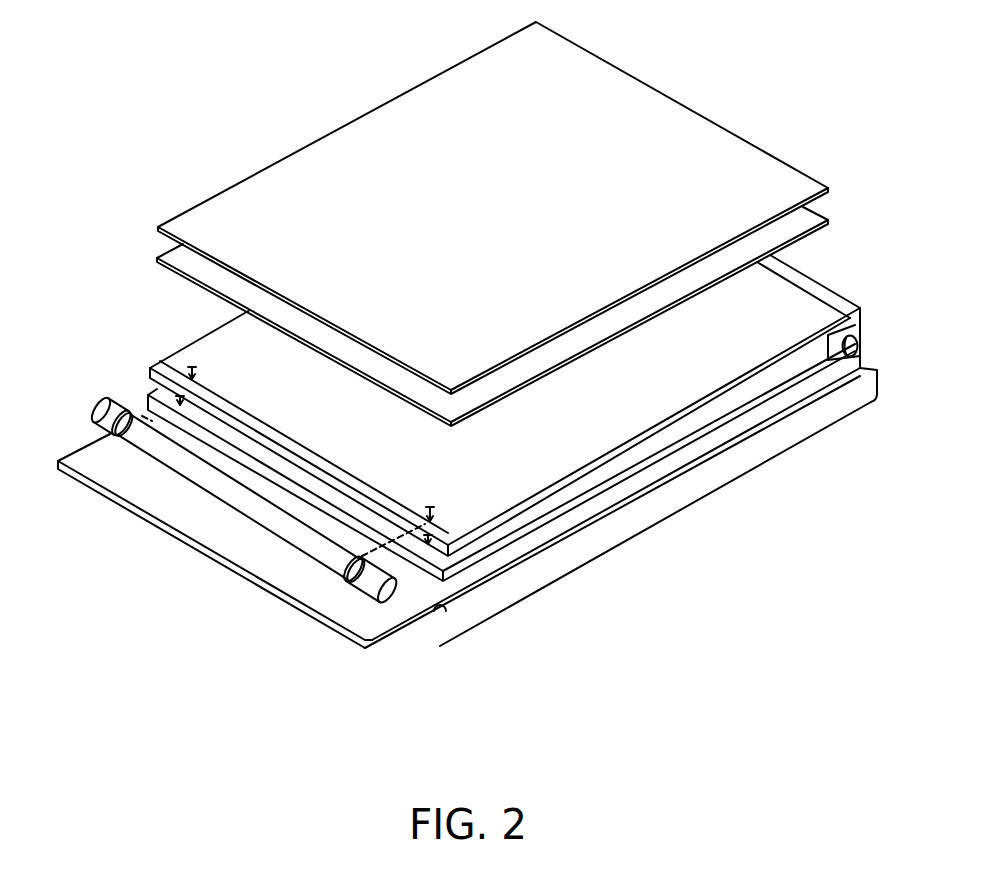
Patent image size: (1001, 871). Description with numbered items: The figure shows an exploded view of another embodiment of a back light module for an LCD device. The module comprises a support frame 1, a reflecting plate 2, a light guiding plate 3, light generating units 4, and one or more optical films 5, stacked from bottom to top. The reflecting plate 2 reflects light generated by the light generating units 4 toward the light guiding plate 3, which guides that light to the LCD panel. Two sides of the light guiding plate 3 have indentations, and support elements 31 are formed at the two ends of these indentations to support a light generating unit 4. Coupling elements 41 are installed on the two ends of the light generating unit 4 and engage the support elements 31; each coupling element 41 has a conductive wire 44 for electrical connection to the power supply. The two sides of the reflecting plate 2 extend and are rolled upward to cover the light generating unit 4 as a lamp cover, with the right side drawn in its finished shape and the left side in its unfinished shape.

The support frame 1 is at (727, 470).
The reflecting plate 2 is at (362, 618).
The light guiding plate 3 is at (735, 350).
The support elements 31 is at (178, 397).
The light generating units 4 is at (152, 445).
The coupling elements 41 is at (862, 344).
The conductive wire 44 is at (865, 360).
The optical films 5 is at (665, 113).